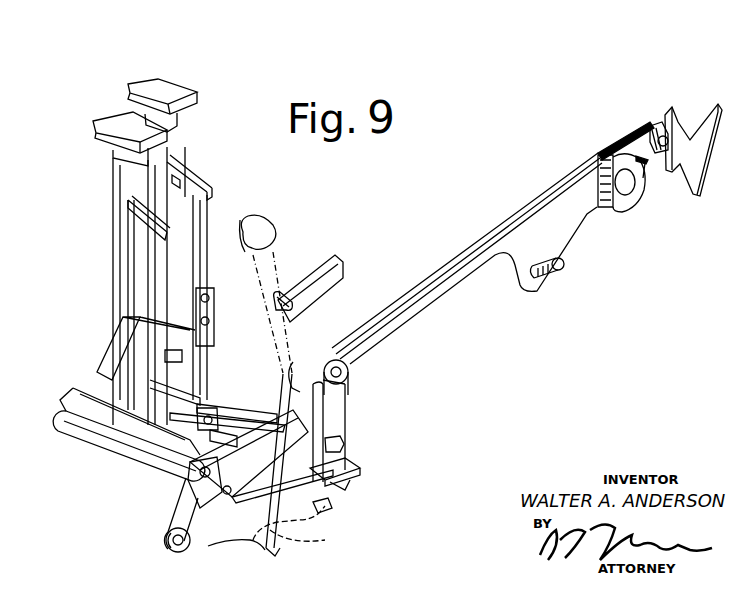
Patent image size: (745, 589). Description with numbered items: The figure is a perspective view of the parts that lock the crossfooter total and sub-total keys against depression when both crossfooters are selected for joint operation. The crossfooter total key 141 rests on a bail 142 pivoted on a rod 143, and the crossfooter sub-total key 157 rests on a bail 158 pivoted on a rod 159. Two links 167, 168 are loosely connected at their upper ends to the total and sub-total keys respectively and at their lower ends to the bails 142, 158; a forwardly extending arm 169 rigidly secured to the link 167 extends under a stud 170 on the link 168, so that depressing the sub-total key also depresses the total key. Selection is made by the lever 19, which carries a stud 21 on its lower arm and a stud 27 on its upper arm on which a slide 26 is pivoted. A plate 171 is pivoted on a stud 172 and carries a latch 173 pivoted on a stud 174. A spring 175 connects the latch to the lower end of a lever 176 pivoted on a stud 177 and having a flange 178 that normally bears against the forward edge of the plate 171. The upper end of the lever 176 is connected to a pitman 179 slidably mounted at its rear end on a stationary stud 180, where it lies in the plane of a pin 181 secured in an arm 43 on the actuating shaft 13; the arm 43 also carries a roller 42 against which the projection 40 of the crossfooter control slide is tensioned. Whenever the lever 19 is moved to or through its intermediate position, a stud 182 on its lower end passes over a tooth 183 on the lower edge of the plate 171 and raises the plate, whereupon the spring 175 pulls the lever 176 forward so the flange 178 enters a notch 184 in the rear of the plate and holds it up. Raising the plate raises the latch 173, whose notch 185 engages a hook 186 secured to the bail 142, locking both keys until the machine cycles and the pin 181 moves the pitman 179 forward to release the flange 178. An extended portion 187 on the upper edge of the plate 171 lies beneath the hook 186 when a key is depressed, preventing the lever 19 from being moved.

The crossfooter total key 141 is at (145, 82).
The crossfooter sub-total key 157 is at (102, 118).
The link 168 is at (160, 285).
The link 167 is at (207, 268).
The forwardly extending arm 169 is at (212, 332).
The stud 170 is at (184, 356).
The rod 159 is at (200, 398).
The bail 142 is at (212, 408).
The hook 186 is at (242, 410).
The notch 185 is at (272, 420).
The bail 158 is at (76, 395).
The rod 143 is at (80, 437).
The stud 174 is at (186, 486).
The stud 172 is at (166, 545).
The latch 173 is at (268, 450).
The spring 175 is at (240, 490).
The lever 19 is at (280, 258).
The slide 26 is at (325, 288).
The stud 27 is at (292, 307).
The extended portion 187 is at (298, 372).
The pitman 179 is at (434, 282).
The stationary stud 180 is at (562, 266).
The actuating shaft 13 is at (618, 208).
The arm 43 is at (626, 154).
The roller 42 is at (655, 126).
The pin 181 is at (646, 168).
The projection 40 is at (678, 118).
The lever 176 is at (345, 411).
The stud 177 is at (345, 445).
The flange 178 is at (358, 474).
The notch 184 is at (342, 484).
The stud 21 is at (330, 506).
The plate 171 is at (314, 535).
The tooth 183 is at (252, 546).
The stud 182 is at (276, 556).